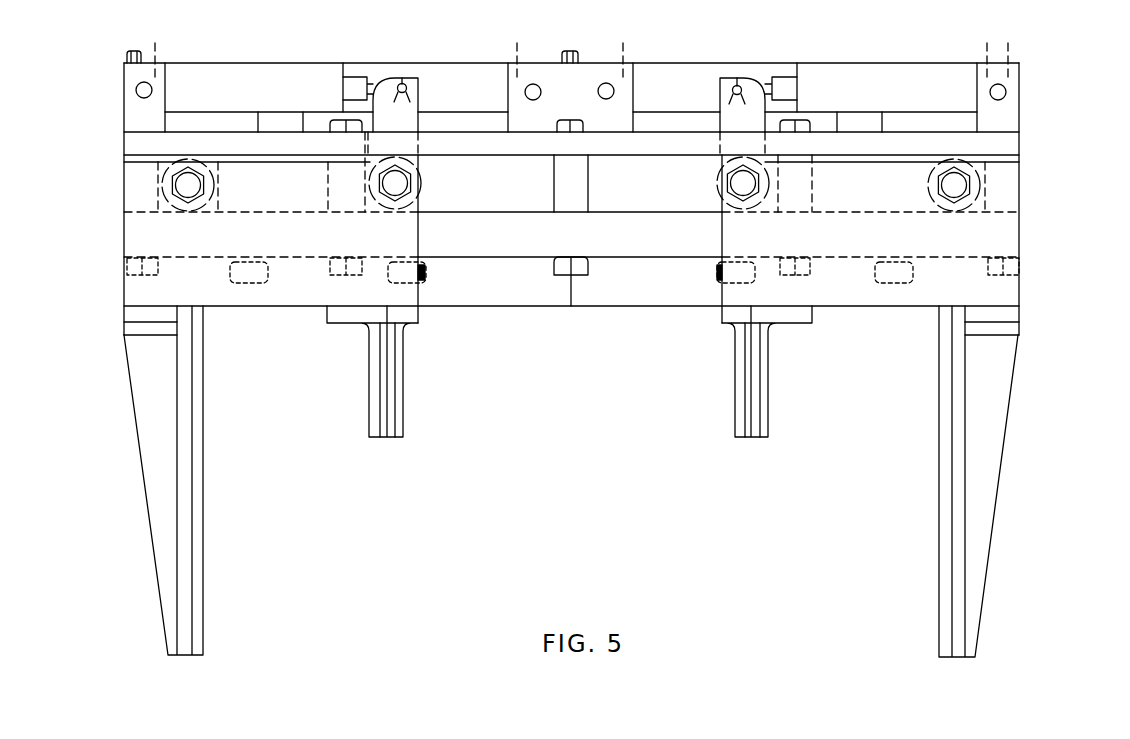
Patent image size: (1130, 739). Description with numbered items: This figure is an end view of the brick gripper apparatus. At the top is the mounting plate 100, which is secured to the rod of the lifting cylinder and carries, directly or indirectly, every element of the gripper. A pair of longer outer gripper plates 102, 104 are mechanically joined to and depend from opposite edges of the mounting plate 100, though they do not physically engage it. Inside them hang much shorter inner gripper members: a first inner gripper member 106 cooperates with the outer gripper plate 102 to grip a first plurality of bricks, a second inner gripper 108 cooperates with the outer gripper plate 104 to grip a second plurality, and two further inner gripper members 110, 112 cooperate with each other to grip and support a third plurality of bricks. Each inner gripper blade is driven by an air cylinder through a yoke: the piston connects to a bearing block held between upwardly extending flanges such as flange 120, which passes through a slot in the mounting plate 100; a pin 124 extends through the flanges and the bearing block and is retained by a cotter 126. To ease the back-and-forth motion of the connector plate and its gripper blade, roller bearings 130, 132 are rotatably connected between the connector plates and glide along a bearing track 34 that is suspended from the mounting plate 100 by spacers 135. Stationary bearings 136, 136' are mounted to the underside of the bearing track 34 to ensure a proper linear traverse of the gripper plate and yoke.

The cross member 34 is at (613, 247).
The mounting plate 100 is at (975, 147).
The outer gripper plate 102 is at (183, 527).
The outer gripper plate 104 is at (958, 522).
The first inner gripper member 106 is at (375, 400).
The second inner gripper 108 is at (755, 415).
The inner gripper member 110 is at (395, 412).
The inner gripper member 112 is at (738, 403).
The flange 120 is at (413, 128).
The pin 124 is at (395, 80).
The cotter 126 is at (418, 86).
The roller bearing 130 is at (420, 183).
The roller bearing 132 is at (124, 157).
The spacer 135 is at (140, 188).
The stationary bearing 136 is at (285, 281).
The bolt head 136' is at (441, 281).